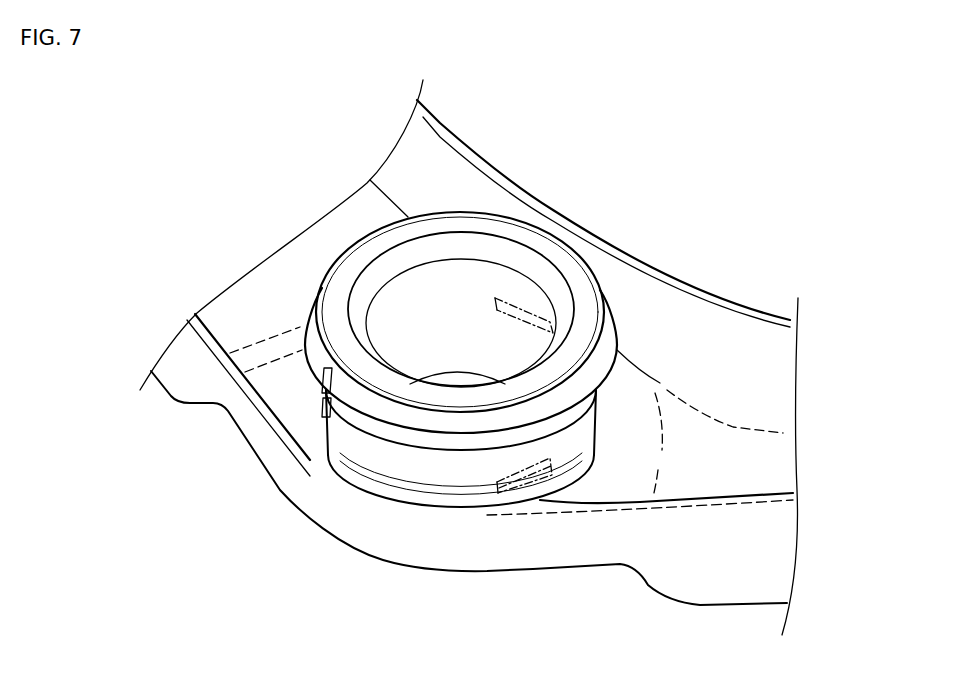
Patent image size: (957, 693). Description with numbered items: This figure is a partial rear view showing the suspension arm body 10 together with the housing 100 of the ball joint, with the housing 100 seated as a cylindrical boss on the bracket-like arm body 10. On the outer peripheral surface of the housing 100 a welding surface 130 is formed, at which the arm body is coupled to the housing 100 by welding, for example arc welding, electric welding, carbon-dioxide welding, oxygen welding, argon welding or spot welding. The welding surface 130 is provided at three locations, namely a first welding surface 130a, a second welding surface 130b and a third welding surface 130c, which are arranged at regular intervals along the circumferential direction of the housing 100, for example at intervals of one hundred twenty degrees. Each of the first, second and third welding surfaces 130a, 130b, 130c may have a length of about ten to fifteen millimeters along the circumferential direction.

The suspension arm body 10 is at (700, 322).
The housing 100 is at (537, 243).
The welding surface 130 is at (426, 481).
The first welding surface 130a is at (325, 410).
The second welding surface 130b is at (500, 312).
The third welding surface 130c is at (511, 539).